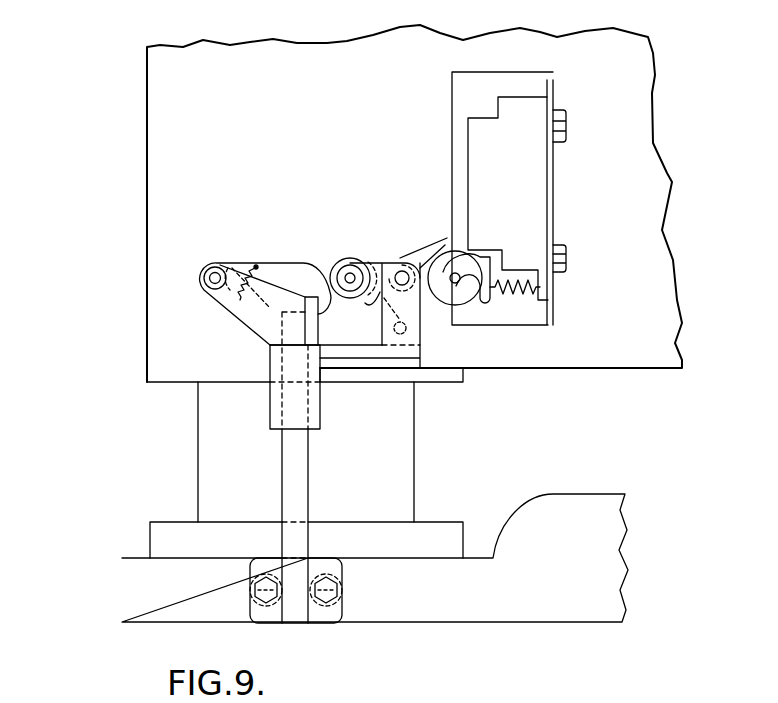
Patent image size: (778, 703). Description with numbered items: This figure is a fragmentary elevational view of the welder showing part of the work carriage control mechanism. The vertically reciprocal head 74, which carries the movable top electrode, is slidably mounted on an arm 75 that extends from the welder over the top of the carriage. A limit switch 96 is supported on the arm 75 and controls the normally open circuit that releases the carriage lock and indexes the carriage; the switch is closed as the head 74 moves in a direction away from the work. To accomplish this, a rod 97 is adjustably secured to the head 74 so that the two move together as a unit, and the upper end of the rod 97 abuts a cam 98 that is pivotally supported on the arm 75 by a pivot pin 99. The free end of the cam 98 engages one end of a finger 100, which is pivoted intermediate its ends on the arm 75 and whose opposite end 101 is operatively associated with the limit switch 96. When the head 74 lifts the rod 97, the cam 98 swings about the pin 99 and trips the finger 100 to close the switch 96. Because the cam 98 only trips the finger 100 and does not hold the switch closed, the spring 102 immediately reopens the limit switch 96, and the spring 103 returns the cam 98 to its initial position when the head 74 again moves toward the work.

The vertically reciprocal head 74 is at (138, 602).
The arm 75 is at (168, 355).
The limit switch 96 is at (482, 145).
The rod 97 is at (295, 481).
The cam 98 is at (290, 270).
The pivot pin 99 is at (215, 263).
The finger 100 is at (376, 262).
The opposite end of finger 101 is at (440, 240).
The spring 102 is at (505, 300).
The spring 103 is at (268, 238).